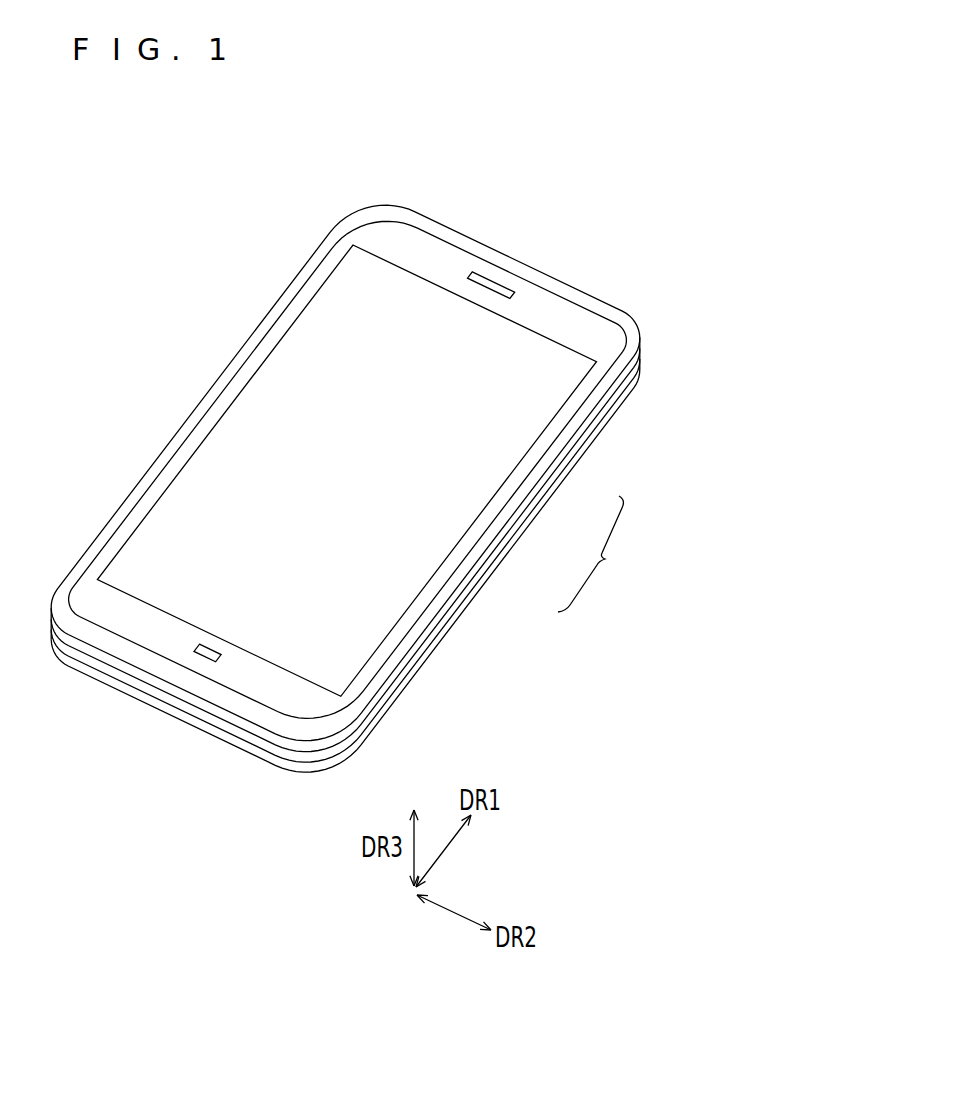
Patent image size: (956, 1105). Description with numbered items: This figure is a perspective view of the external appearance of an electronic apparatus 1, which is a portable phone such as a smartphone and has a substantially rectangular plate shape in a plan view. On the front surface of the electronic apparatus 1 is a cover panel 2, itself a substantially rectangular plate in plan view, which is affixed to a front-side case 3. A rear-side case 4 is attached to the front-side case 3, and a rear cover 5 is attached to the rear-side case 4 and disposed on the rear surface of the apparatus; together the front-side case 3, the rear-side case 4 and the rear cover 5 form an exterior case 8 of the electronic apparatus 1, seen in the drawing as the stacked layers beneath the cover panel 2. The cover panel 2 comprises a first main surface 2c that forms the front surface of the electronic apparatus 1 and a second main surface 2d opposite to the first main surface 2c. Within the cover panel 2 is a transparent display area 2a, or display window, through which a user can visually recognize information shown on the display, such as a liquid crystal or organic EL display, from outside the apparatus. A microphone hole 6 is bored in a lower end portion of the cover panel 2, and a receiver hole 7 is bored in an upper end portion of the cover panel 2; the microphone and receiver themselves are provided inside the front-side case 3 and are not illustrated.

The electronic apparatus 1 is at (598, 242).
The cover panel 2 is at (185, 482).
The display area 2a is at (148, 542).
The first main surface 2c is at (307, 333).
The second main surface 2d is at (275, 382).
The front-side case 3 is at (542, 485).
The rear-side case 4 is at (522, 522).
The rear cover 5 is at (500, 567).
The microphone hole 6 is at (204, 663).
The receiver hole 7 is at (498, 275).
The exterior case 8 is at (591, 554).